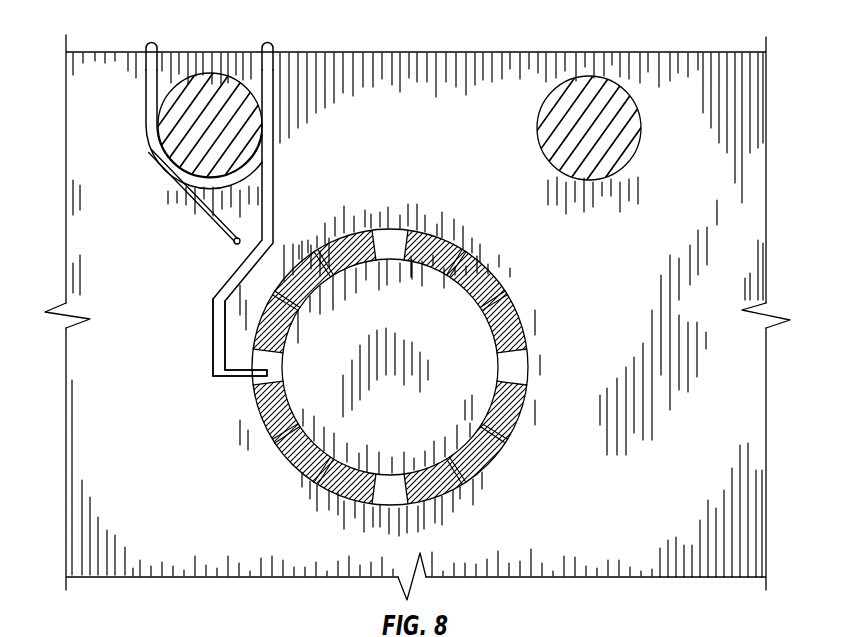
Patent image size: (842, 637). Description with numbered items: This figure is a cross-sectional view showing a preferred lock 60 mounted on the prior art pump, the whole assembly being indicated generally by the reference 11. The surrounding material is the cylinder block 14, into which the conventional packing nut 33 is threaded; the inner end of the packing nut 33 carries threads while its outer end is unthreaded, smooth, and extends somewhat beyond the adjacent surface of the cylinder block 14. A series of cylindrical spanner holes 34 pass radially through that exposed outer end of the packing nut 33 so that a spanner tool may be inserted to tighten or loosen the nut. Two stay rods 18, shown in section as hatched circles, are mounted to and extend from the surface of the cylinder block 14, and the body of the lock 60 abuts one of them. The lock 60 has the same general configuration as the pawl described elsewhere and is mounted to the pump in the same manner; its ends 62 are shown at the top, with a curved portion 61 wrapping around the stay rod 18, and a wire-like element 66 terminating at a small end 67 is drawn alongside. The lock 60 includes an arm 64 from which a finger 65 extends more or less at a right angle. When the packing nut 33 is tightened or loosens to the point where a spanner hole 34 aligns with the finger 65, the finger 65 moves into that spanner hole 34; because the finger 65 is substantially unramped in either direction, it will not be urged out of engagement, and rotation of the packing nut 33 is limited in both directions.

The fuel tank 11 is at (519, 50).
The cylinder block 14 is at (713, 166).
The stay rod 18 is at (164, 123).
The packing nut 33 is at (524, 340).
The spanner holes 34 is at (272, 376).
The lock 60 is at (280, 184).
The curved tube section 61 is at (151, 144).
The tube end 62 is at (151, 42).
The arm 64 is at (213, 322).
The finger 65 is at (222, 378).
The wire 66 is at (177, 192).
The wire end 67 is at (230, 243).